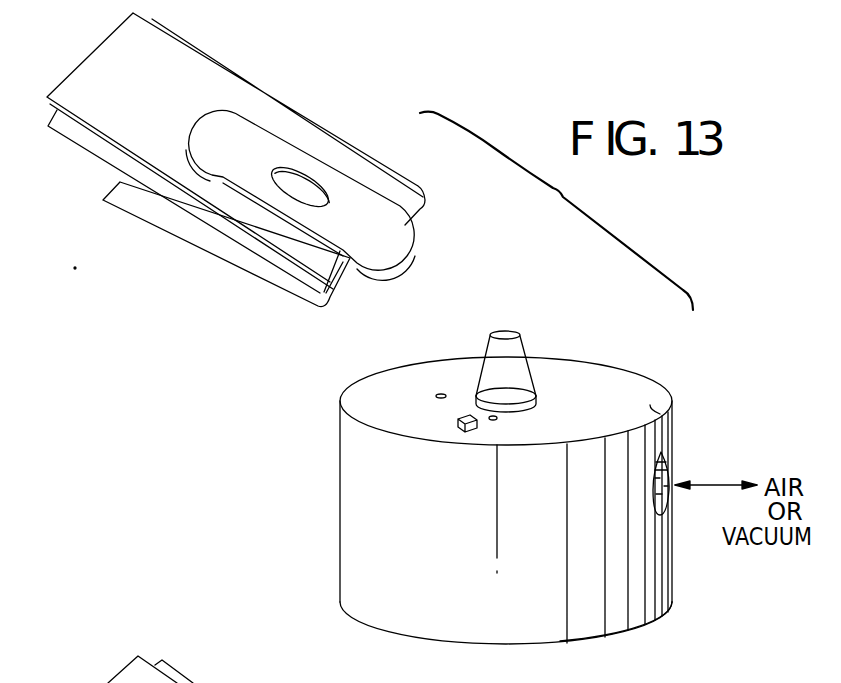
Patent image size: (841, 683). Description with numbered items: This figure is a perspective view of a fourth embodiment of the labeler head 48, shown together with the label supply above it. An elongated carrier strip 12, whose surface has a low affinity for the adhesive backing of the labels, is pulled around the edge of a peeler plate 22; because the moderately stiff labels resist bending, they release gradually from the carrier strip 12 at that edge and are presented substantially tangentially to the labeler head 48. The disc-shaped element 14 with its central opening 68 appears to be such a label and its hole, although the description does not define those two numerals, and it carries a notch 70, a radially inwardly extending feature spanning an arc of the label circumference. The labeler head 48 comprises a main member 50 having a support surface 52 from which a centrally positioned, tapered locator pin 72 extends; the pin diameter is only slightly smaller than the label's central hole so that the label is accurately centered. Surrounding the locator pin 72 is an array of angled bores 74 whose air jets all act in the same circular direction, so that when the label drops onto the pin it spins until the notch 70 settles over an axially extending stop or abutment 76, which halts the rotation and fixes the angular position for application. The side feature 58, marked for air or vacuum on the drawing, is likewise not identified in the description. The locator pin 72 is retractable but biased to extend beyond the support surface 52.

The carrier strip 12 is at (193, 70).
The disc 14 is at (263, 133).
The peeler plate 22 is at (80, 147).
The labeler head 48 is at (330, 507).
The main member 50 is at (623, 635).
The support surface 52 is at (656, 401).
The port 58 is at (670, 500).
The central hole 68 is at (322, 190).
The notch 70 is at (277, 226).
The locator pin 72 is at (528, 352).
The angled bores 74 is at (442, 395).
The stop or abutment 76 is at (455, 422).